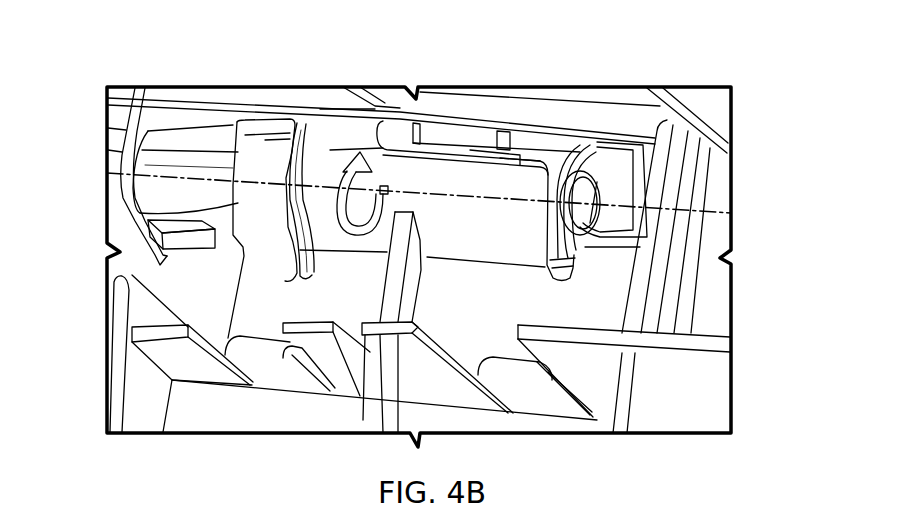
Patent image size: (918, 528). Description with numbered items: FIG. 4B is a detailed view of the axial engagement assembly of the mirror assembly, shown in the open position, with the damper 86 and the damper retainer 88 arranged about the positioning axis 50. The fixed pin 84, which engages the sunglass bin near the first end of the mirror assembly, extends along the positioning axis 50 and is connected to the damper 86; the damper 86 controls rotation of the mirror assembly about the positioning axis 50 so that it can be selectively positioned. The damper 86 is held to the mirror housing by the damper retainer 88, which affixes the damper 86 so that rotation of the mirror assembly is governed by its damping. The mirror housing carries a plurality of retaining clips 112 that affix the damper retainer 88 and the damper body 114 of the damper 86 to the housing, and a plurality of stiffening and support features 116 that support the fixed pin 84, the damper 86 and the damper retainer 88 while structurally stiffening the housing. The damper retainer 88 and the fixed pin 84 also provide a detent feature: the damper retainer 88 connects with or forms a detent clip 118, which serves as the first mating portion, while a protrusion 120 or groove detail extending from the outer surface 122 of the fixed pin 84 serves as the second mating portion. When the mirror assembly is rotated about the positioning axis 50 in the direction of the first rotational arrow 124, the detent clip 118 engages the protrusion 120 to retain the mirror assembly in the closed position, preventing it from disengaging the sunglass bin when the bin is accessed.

The positioning axis 50 is at (623, 203).
The fixed pin 84 is at (185, 158).
The damper 86 is at (555, 162).
The damper retainer 88 is at (440, 167).
The retaining clips 112 is at (350, 124).
The damper body 114 is at (513, 153).
The stiffening and support features 116 is at (281, 322).
The detent clip 118 is at (248, 205).
The protrusion 120 is at (310, 133).
The outer surface 122 is at (189, 166).
The first rotational arrow 124 is at (350, 218).